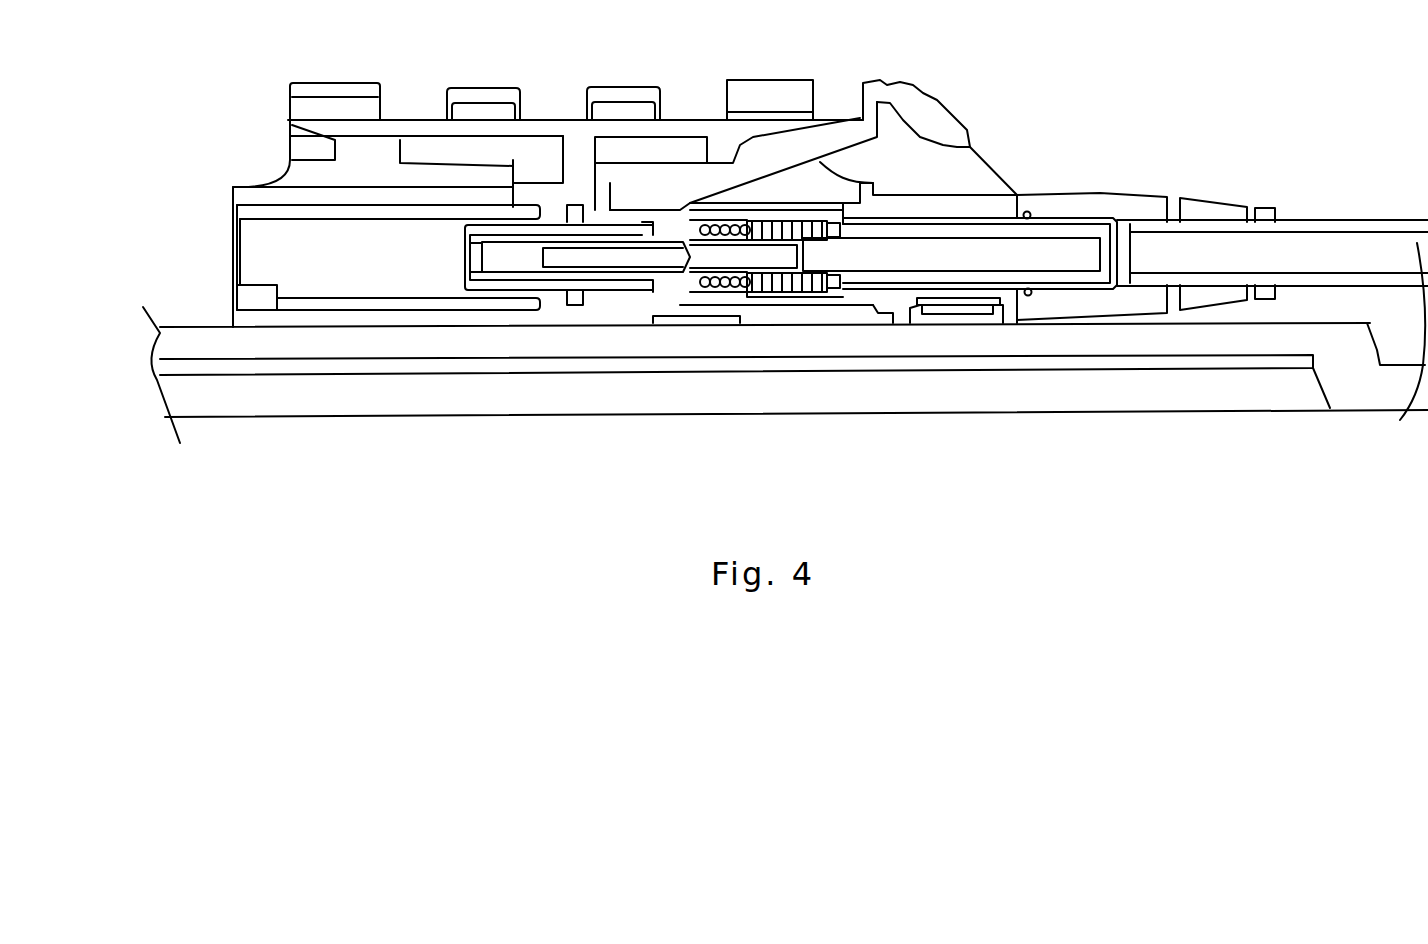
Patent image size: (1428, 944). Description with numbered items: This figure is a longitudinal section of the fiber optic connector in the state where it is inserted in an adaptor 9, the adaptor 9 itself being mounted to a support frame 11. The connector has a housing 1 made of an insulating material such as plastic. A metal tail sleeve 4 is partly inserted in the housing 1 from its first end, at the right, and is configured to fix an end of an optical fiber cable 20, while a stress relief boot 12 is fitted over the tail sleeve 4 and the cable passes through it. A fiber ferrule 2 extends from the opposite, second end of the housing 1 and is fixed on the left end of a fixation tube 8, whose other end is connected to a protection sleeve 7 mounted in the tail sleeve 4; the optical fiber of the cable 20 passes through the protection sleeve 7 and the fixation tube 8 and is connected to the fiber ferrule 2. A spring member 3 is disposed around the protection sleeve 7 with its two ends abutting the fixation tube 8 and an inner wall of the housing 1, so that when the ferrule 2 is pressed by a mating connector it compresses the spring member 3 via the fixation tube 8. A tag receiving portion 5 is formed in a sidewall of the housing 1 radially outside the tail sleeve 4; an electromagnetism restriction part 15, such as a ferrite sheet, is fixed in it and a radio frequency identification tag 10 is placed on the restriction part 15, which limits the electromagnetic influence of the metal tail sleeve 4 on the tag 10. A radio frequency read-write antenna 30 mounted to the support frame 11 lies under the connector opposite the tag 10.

The housing 1 is at (655, 200).
The fiber ferrule 2 is at (598, 250).
The spring member 3 is at (728, 230).
The tail sleeve 4 is at (1030, 225).
The tag receiving portion 5 is at (918, 318).
The protection sleeve 7 is at (838, 255).
The fixation tube 8 is at (688, 280).
The adaptor 9 is at (377, 195).
The radio frequency identification tag 10 is at (956, 308).
The support frame 11 is at (350, 340).
The stress relief boot 12 is at (1085, 200).
The electromagnetism restriction part 15 is at (933, 303).
The optical fiber cable 20 is at (1327, 243).
The radio frequency read-write antenna 30 is at (945, 357).